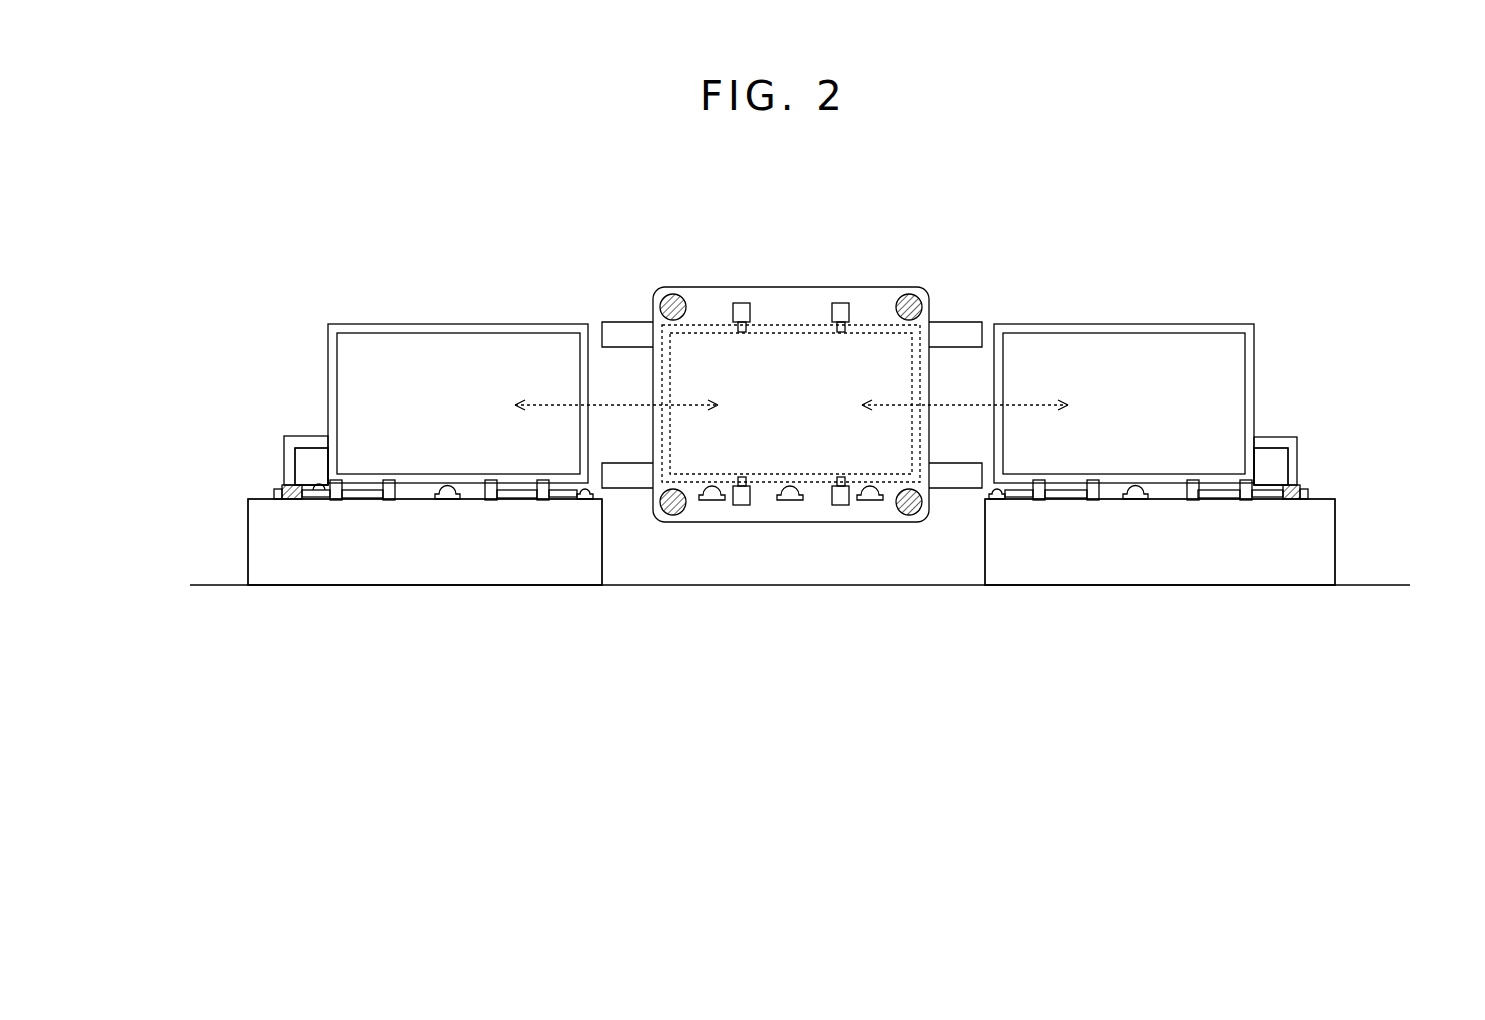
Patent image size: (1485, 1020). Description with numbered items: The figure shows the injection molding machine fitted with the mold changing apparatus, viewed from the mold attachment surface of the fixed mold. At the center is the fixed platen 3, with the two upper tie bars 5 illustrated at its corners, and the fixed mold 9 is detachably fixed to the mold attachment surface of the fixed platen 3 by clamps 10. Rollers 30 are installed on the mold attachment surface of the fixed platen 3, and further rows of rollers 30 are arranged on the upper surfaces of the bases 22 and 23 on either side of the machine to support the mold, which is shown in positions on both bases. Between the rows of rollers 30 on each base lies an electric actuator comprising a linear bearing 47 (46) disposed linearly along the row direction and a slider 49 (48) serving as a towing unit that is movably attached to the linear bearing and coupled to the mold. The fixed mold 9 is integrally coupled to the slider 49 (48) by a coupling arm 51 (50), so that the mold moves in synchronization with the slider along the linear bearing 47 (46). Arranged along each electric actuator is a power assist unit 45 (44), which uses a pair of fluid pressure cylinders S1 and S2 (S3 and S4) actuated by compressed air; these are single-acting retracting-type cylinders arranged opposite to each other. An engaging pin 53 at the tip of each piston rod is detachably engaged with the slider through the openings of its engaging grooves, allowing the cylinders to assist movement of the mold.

The fixed platen 3 is at (930, 296).
The tie bar 5 is at (674, 294).
The fixed mold 9 is at (440, 324).
The clamp 10 is at (745, 302).
The base 22 is at (1336, 530).
The base 23 is at (248, 553).
The roller 30 is at (318, 503).
The power assist unit 44 is at (1249, 542).
The power assist unit 45 is at (399, 519).
The linear bearing 46 is at (1305, 489).
The linear bearing 47 is at (274, 495).
The slider 48 is at (1300, 486).
The slider 49 is at (284, 486).
The coupling arm 50 is at (1292, 440).
The coupling arm 51 is at (288, 437).
The engaging pin 53 is at (296, 483).
The fluid pressure cylinder S1 is at (362, 492).
The fluid pressure cylinder S2 is at (518, 494).
The fluid pressure cylinder S3 is at (1210, 492).
The fluid pressure cylinder S4 is at (1077, 492).